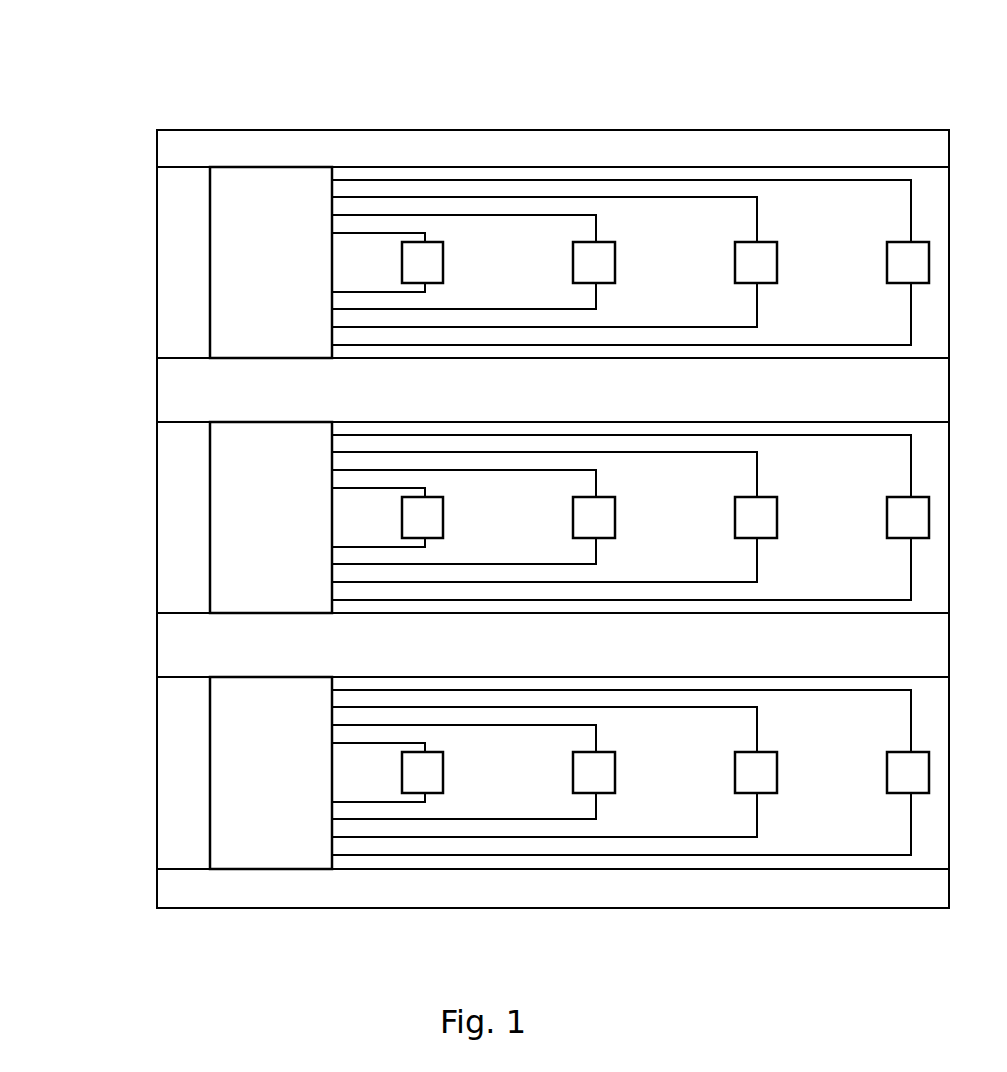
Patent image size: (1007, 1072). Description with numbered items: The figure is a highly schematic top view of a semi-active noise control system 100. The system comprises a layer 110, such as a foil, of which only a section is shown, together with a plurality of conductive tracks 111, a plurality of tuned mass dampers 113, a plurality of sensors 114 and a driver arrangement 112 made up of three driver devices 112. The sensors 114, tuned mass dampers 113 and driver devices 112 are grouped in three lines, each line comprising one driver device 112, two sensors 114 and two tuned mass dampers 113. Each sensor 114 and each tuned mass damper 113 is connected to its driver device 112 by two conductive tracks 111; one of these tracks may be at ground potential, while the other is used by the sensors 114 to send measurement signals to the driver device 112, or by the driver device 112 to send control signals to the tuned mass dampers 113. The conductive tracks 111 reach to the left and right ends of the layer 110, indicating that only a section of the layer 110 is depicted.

The semi-active noise control system 100 is at (784, 84).
The layer 110 is at (263, 148).
The conductive tracks 111 is at (357, 306).
The driver arrangement 112 is at (208, 278).
The tuned mass dampers 113 is at (617, 272).
The sensors 114 is at (446, 261).